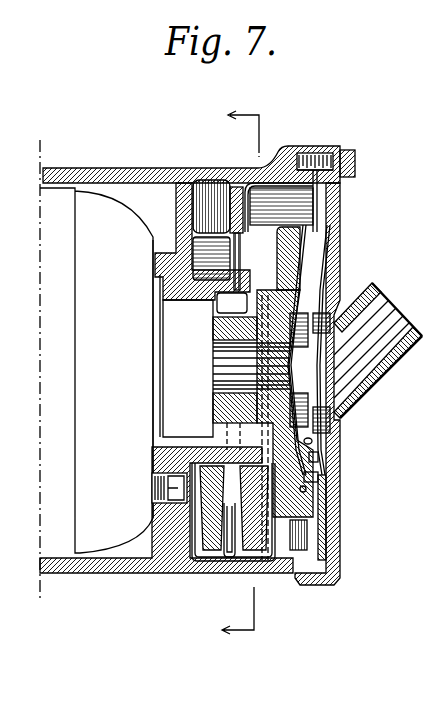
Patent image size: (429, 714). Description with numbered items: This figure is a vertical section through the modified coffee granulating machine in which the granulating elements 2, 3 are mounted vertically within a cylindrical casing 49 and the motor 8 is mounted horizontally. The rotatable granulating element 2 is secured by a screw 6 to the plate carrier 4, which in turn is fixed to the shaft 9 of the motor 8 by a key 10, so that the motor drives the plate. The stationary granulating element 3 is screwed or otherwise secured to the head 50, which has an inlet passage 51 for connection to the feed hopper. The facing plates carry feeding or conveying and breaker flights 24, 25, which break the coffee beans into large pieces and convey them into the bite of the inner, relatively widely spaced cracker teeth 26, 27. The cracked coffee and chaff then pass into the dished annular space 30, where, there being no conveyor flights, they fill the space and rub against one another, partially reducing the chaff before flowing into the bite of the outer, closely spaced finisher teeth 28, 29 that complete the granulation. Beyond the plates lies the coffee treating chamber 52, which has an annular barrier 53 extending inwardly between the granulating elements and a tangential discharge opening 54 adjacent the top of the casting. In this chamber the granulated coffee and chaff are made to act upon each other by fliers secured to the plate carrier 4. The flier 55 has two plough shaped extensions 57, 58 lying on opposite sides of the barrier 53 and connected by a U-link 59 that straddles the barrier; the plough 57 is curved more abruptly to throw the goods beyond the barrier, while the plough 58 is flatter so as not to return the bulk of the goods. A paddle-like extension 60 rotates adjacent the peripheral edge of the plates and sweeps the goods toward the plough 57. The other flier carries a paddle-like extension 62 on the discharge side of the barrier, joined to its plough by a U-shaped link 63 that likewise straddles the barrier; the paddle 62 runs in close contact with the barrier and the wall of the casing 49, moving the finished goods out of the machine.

The granulating element 2 is at (323, 258).
The granulating element 3 is at (320, 270).
The plate carrier 4 is at (280, 253).
The screw 6 is at (251, 372).
The motor 8 is at (96, 370).
The shaft 9 is at (217, 388).
The key 10 is at (223, 342).
The feeding or conveying and breaker flight 24 is at (301, 370).
The feeding or conveying and breaker flight 25 is at (315, 430).
The inner set of teeth 26 is at (313, 443).
The inner set of teeth 27 is at (313, 457).
The outer set of teeth 28 is at (306, 489).
The outer set of teeth 29 is at (325, 510).
The dished annular space 30 is at (312, 477).
The cylindrical casing 49 is at (200, 575).
The head 50 is at (338, 440).
The inlet passage 51 is at (392, 313).
The coffee treating chamber 52 is at (287, 197).
The annular barrier 53 is at (236, 200).
The tangential discharge opening 54 is at (187, 228).
The flier 55 is at (260, 543).
The plough shaped extension 57 is at (254, 500).
The plough shaped extension 58 is at (212, 477).
The U-link 59 is at (220, 550).
The paddle-like extension 60 is at (298, 533).
The paddle-like extension 62 is at (210, 198).
The U-shaped link 63 is at (233, 323).